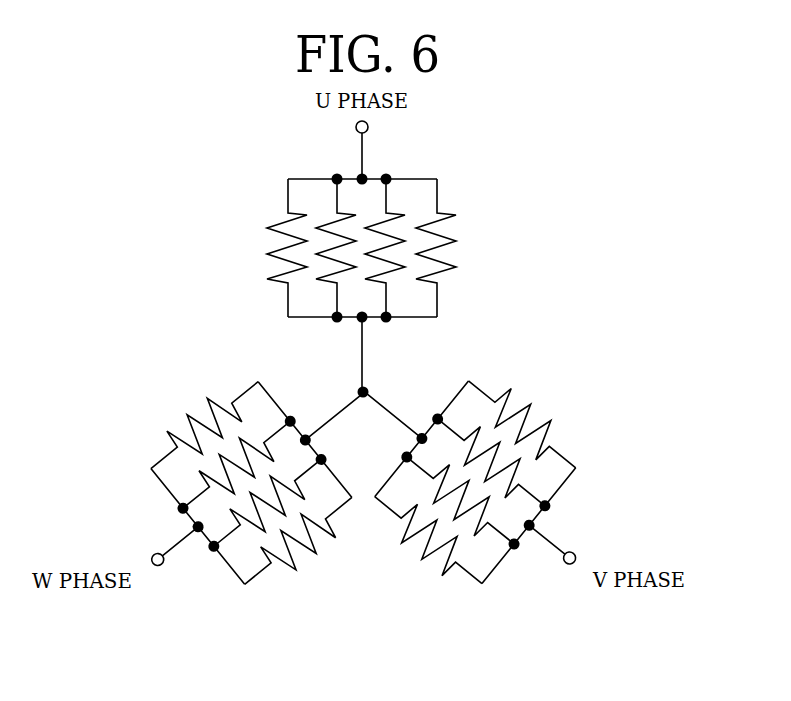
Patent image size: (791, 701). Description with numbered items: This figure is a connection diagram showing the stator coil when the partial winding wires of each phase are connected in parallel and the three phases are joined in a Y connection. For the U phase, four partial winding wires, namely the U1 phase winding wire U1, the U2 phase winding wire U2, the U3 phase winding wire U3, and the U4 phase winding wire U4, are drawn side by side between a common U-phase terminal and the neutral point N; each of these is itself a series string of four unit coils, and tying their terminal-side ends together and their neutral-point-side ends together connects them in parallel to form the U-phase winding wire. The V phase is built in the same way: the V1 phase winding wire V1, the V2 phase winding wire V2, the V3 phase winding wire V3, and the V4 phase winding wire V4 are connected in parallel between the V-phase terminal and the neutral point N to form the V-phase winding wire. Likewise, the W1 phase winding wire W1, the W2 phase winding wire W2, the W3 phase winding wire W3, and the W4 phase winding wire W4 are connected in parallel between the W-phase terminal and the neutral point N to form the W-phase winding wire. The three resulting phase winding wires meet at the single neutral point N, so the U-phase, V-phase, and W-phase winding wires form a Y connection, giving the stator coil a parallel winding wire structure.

The U1 phase winding wire U1 is at (287, 232).
The U2 phase winding wire U2 is at (336, 232).
The U3 phase winding wire U3 is at (385, 232).
The U4 phase winding wire U4 is at (436, 232).
The V1 phase winding wire V1 is at (534, 433).
The V2 phase winding wire V2 is at (504, 472).
The V3 phase winding wire V3 is at (470, 515).
The V4 phase winding wire V4 is at (437, 553).
The W1 phase winding wire W1 is at (285, 547).
The W2 phase winding wire W2 is at (257, 513).
The W3 phase winding wire W3 is at (224, 470).
The W4 phase winding wire W4 is at (194, 432).
The neutral point N is at (375, 383).